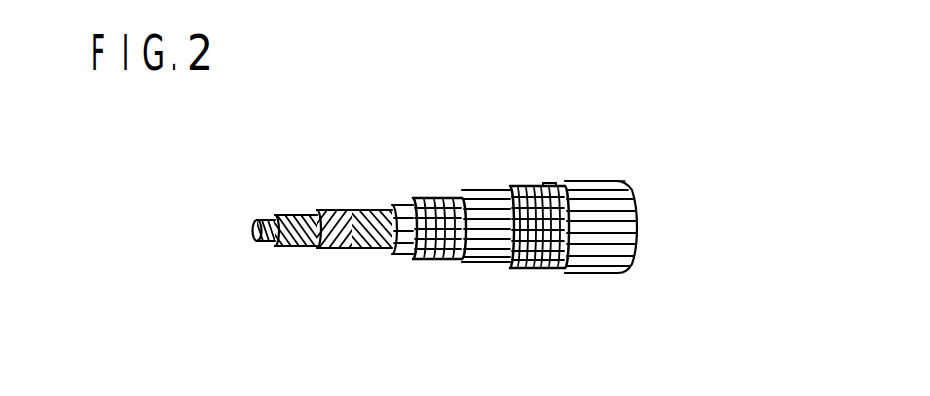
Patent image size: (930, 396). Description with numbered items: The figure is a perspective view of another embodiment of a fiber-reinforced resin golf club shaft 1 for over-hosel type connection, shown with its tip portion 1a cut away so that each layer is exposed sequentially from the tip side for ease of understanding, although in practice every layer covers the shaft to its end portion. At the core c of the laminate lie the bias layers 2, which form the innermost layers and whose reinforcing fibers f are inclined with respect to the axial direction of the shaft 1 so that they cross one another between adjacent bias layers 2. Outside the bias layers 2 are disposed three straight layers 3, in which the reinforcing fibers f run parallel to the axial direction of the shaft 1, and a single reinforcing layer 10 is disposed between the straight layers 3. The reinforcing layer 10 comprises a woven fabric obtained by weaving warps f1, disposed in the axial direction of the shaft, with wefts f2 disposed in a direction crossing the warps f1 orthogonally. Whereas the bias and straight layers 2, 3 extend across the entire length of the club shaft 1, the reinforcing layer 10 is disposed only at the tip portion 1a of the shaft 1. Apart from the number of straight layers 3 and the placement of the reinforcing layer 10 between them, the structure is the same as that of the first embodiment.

The club shaft 1 is at (606, 169).
The tip portion 1a is at (547, 183).
The bias layers 2 is at (267, 247).
The straight layers 3 is at (395, 255).
The reinforcing layer 10 is at (431, 259).
The core c is at (393, 207).
The reinforcing fibers f is at (320, 211).
The warps f1 is at (515, 187).
The wefts f2 is at (444, 198).